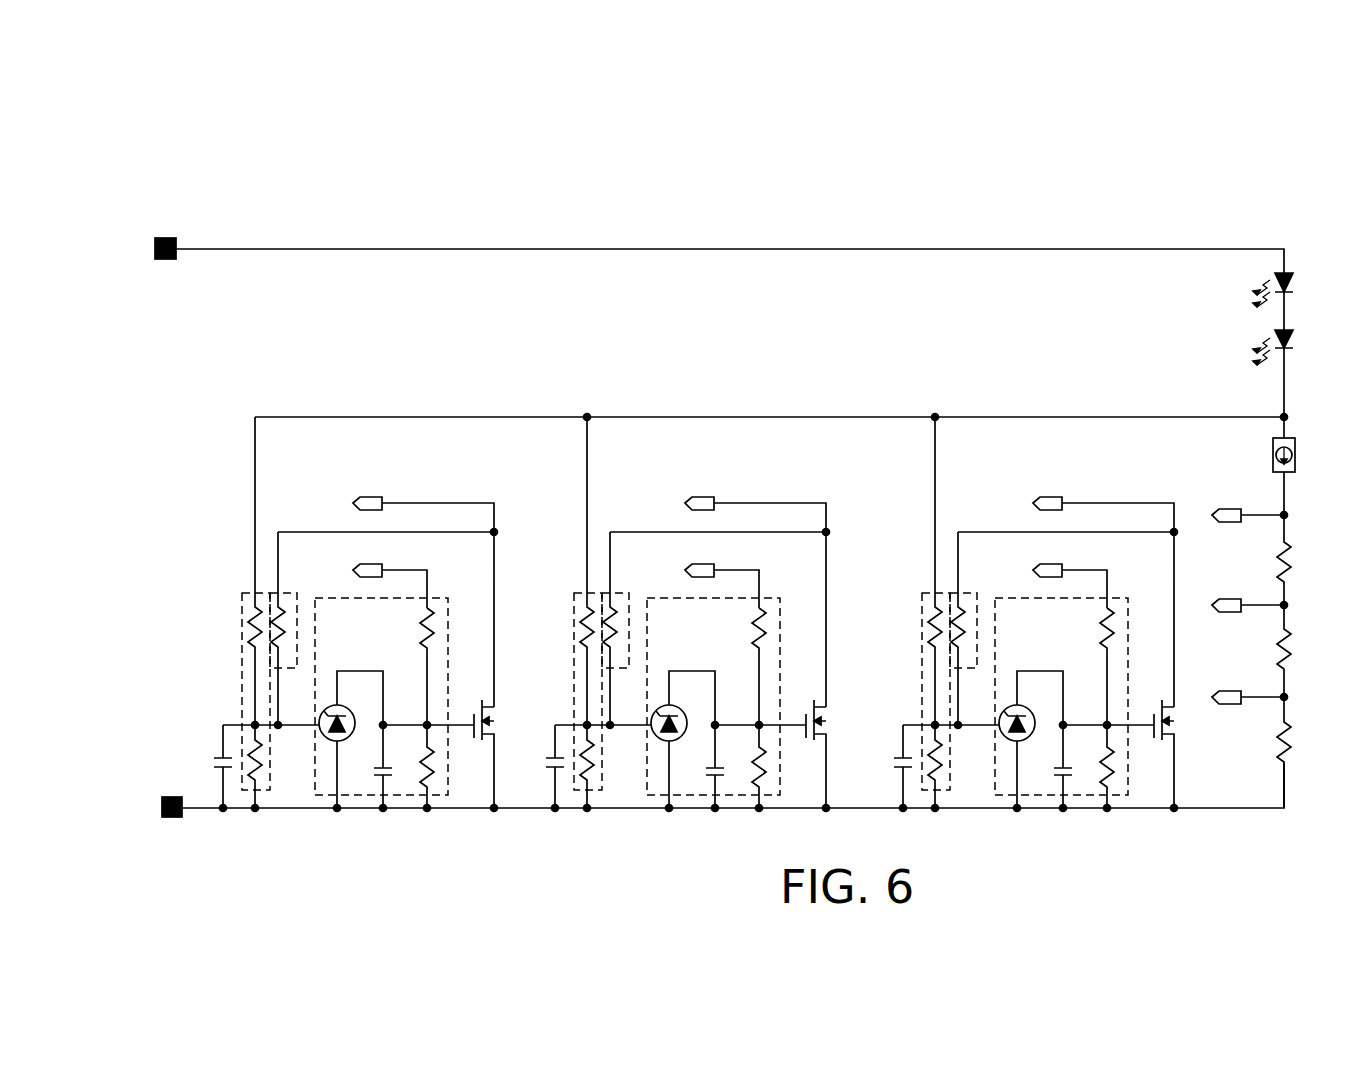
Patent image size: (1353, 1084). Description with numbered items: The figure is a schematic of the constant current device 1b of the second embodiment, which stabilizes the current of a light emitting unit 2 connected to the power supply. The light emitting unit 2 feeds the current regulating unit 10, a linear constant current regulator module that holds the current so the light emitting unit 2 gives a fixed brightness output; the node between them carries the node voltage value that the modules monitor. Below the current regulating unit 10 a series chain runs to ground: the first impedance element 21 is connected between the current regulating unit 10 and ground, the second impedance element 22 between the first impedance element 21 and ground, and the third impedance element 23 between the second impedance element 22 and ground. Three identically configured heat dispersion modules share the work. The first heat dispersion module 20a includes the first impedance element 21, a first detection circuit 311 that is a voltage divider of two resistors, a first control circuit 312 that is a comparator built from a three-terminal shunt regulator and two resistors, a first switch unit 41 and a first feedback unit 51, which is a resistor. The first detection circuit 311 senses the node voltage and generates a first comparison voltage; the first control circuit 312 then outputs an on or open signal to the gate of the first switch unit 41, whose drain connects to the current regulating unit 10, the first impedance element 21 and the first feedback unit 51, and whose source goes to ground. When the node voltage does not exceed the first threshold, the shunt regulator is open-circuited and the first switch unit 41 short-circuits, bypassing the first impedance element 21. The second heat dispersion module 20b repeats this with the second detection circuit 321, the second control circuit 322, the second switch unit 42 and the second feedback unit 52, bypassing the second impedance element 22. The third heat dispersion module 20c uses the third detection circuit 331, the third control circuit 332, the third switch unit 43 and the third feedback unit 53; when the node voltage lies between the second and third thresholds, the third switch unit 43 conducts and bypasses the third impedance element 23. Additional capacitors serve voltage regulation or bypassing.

The constant current device 1b is at (198, 188).
The light emitting unit 2 is at (1295, 290).
The current regulating unit 10 is at (1296, 466).
The first impedance element 21 is at (1297, 560).
The second impedance element 22 is at (1297, 651).
The third impedance element 23 is at (1297, 752).
The first heat dispersion module 20a is at (237, 556).
The second heat dispersion module 20b is at (686, 636).
The third heat dispersion module 20c is at (1032, 636).
The first switch unit 41 is at (485, 745).
The second switch unit 42 is at (817, 745).
The third switch unit 43 is at (1165, 745).
The first feedback unit 51 is at (291, 668).
The second feedback unit 52 is at (625, 630).
The third feedback unit 53 is at (973, 630).
The first detection circuit 311 is at (269, 790).
The first control circuit 312 is at (333, 795).
The second detection circuit 321 is at (588, 633).
The second control circuit 322 is at (713, 727).
The third detection circuit 331 is at (935, 633).
The third control circuit 332 is at (1061, 727).